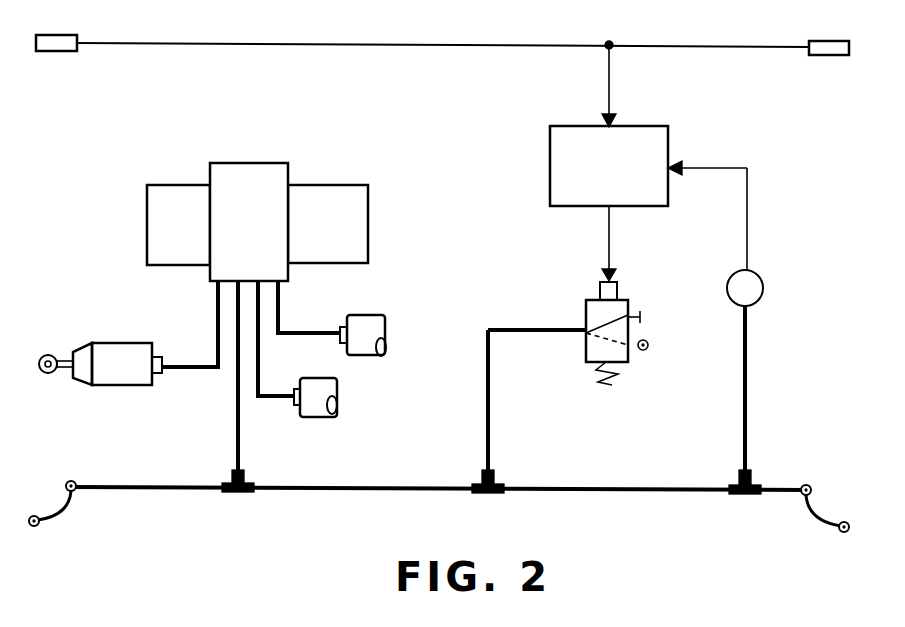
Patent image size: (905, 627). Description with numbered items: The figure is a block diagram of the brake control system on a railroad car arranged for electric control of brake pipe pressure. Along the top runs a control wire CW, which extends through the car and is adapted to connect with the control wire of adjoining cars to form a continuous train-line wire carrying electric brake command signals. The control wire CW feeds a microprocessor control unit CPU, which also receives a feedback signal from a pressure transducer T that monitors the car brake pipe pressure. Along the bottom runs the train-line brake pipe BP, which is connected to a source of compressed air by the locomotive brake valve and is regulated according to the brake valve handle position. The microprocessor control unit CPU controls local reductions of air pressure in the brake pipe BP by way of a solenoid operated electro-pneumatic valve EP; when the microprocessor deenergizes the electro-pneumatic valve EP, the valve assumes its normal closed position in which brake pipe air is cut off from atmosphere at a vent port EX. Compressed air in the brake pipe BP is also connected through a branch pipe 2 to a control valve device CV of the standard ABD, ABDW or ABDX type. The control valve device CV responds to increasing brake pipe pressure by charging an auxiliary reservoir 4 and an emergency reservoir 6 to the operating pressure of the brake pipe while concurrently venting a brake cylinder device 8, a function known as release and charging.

The control wire CW is at (345, 45).
The microprocessor control unit CPU is at (637, 170).
The pressure transducer T is at (745, 329).
The electro-pneumatic valve EP is at (584, 294).
The vent port EX is at (631, 352).
The control valve device CV is at (268, 222).
The branch pipe 2 is at (238, 435).
The auxiliary reservoir 4 is at (366, 315).
The emergency reservoir 6 is at (330, 384).
The brake cylinder device 8 is at (118, 343).
The brake pipe BP is at (412, 487).